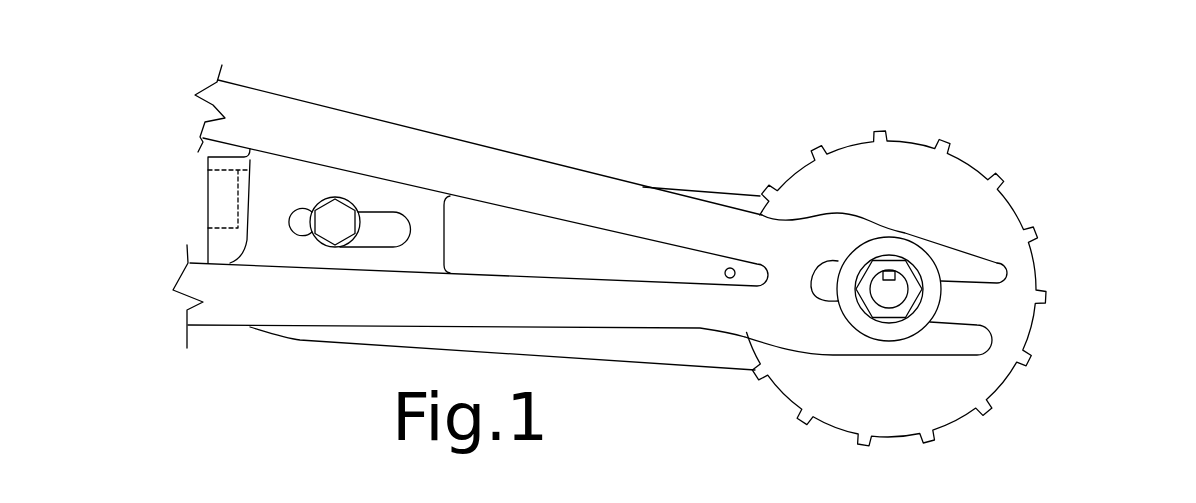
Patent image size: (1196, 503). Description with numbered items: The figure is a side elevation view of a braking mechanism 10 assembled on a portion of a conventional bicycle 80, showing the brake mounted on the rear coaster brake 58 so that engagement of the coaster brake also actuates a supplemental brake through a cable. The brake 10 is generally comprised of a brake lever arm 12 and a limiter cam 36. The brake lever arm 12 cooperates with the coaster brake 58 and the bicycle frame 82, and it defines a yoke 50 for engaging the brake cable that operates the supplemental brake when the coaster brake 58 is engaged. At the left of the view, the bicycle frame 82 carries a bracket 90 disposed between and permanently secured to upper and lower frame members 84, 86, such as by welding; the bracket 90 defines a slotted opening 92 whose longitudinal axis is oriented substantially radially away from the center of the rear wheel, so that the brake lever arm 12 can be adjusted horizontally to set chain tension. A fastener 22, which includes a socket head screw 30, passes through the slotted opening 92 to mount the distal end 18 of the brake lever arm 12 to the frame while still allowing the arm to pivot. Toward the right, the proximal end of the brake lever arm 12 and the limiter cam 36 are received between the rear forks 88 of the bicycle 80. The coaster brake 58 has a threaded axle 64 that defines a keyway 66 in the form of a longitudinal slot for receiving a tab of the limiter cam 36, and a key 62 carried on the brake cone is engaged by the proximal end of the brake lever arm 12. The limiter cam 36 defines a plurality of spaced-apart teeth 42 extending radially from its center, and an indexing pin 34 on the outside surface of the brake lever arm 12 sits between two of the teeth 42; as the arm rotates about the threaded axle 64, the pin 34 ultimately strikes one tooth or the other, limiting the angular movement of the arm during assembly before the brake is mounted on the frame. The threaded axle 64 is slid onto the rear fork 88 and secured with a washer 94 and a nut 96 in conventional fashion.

The braking mechanism 10 is at (1107, 100).
The brake lever arm 12 is at (690, 190).
The distal end 18 is at (208, 212).
The fastener 22 is at (318, 246).
The socket head screw 30 is at (334, 228).
The indexing pin 34 is at (725, 272).
The limiter cam 36 is at (843, 138).
The teeth 42 is at (997, 174).
The yoke 50 is at (233, 210).
The coaster brake 58 is at (970, 499).
The key 62 is at (922, 499).
The threaded axle 64 is at (893, 288).
The keyway 66 is at (889, 272).
The bicycle 80 is at (585, 112).
The bicycle frame 82 is at (490, 146).
The upper frame member 84 is at (407, 150).
The lower frame member 86 is at (557, 300).
The rear forks 88 is at (951, 337).
The bracket 90 is at (278, 172).
The slotted opening 92 is at (307, 210).
The washer 94 is at (848, 306).
The nut 96 is at (853, 312).